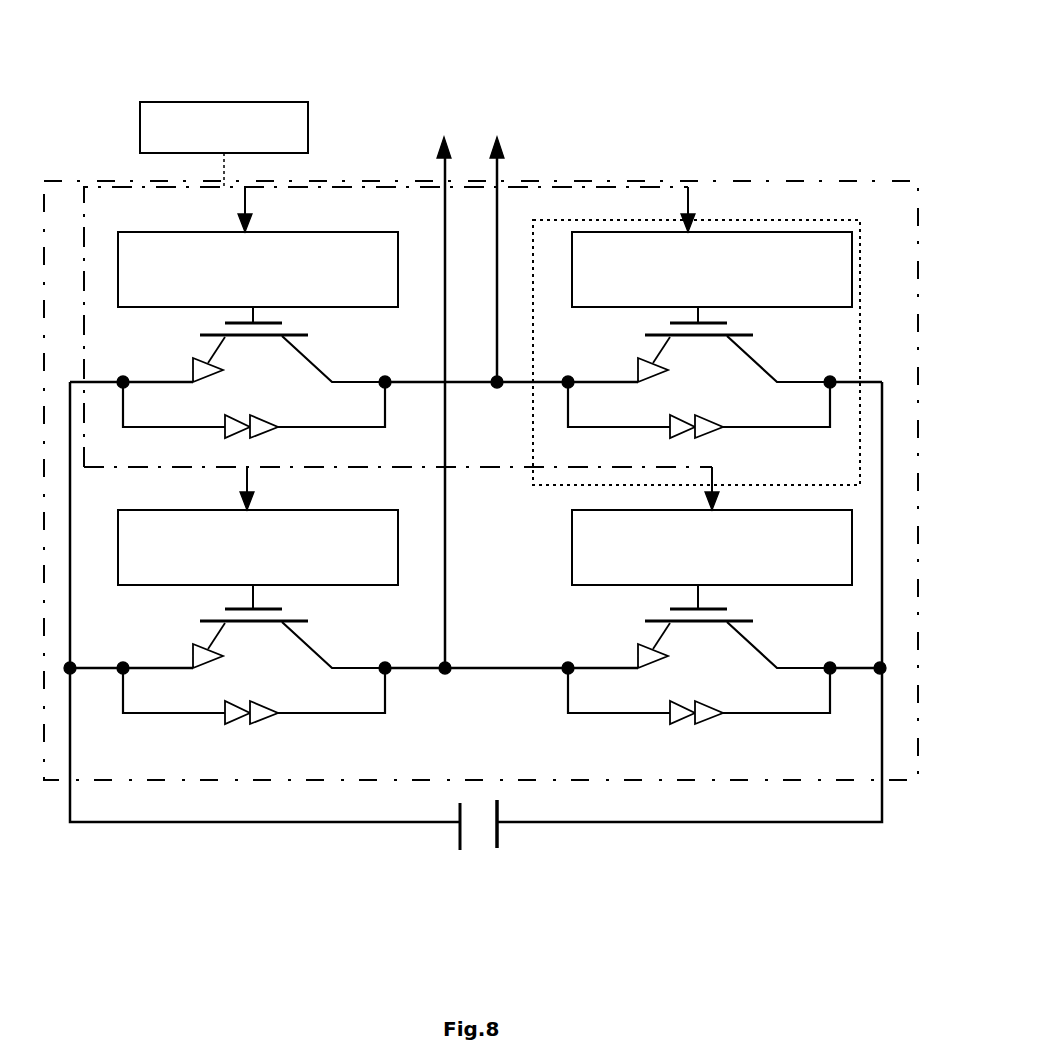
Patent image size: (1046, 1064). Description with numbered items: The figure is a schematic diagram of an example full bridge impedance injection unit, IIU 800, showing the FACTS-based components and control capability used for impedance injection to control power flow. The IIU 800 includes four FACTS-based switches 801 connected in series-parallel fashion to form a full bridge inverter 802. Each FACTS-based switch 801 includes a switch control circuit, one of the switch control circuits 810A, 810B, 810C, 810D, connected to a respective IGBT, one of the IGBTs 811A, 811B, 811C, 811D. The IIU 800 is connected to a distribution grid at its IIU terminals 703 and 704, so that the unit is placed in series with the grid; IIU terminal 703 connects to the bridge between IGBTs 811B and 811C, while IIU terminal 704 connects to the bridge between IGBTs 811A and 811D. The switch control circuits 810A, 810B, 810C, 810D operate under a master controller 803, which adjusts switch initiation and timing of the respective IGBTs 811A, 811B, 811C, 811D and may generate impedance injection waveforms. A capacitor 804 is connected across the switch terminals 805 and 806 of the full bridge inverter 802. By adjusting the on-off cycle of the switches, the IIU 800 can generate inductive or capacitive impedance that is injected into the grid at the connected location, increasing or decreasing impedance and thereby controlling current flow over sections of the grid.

The IIU 800 is at (567, 66).
The FACTS-based switch 801 is at (758, 218).
The full bridge inverter 802 is at (860, 180).
The master controller 803 is at (401, 306).
The capacitor 804 is at (477, 827).
The switch terminal 805 is at (188, 822).
The switch terminal 806 is at (708, 824).
The IIU terminal 703 is at (443, 140).
The IIU terminal 704 is at (497, 140).
The switch control circuit 810A is at (258, 277).
The switch control circuit 810B is at (712, 559).
The switch control circuit 810C is at (258, 559).
The switch control circuit 810D is at (712, 277).
The IGBT 811A is at (215, 323).
The IGBT 811B is at (655, 608).
The IGBT 811C is at (217, 612).
The IGBT 811D is at (743, 322).